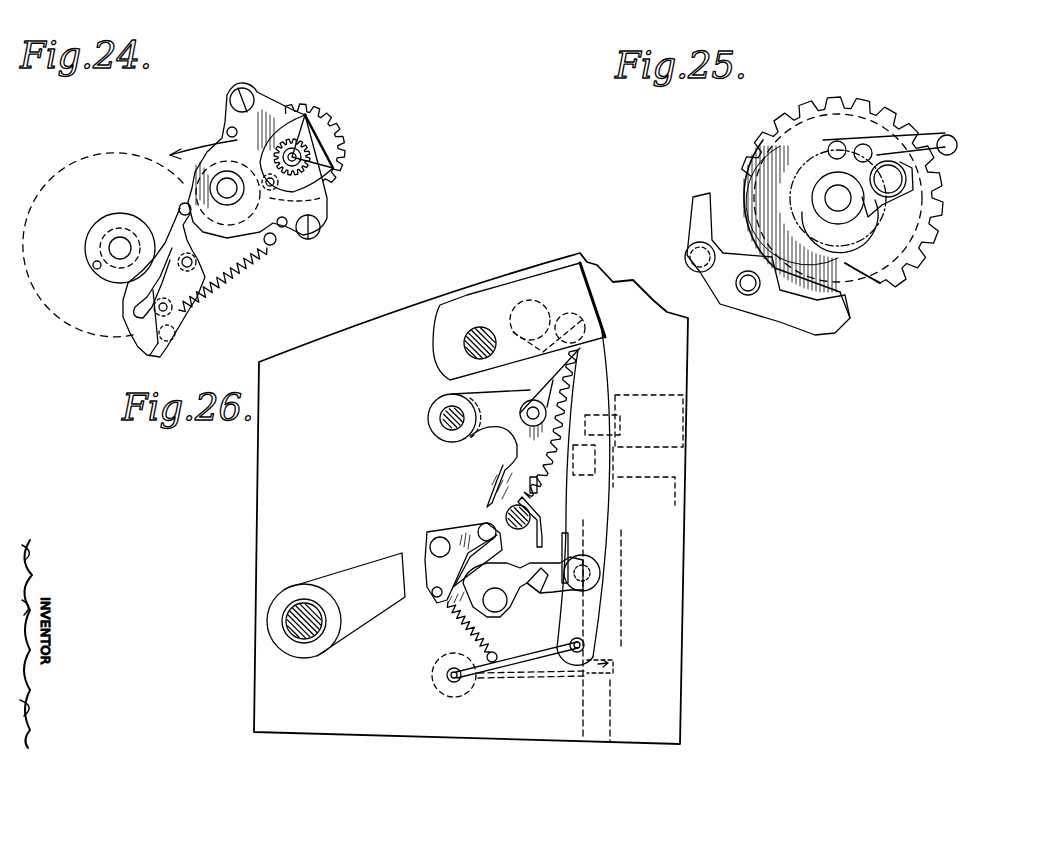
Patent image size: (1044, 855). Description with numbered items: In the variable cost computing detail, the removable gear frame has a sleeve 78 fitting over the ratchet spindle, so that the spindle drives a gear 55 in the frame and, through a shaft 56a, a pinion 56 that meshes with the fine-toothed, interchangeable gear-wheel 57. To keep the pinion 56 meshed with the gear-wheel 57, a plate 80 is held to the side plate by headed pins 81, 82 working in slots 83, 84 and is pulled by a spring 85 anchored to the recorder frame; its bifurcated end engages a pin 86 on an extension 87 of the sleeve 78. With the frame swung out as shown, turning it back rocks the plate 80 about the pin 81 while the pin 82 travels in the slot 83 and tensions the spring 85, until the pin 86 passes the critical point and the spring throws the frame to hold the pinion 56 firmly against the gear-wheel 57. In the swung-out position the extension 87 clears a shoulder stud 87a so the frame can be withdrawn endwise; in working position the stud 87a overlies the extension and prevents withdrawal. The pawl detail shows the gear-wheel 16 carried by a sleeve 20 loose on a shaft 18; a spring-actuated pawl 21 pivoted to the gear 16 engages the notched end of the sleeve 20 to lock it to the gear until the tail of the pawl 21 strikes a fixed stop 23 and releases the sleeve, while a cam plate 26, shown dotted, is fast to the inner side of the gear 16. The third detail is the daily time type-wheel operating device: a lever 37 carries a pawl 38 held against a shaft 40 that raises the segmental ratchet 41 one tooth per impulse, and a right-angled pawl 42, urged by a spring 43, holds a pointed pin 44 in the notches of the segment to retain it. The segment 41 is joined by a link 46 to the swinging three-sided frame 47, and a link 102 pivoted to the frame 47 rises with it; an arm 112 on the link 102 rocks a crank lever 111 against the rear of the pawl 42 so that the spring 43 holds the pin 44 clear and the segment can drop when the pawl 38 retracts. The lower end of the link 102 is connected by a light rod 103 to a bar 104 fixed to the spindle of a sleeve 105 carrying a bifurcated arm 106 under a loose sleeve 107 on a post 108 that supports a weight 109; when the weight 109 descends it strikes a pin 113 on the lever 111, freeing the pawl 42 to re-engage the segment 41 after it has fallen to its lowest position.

In FIG. 24, the gear-wheel 57 is at (46, 190).
In FIG. 24, the slot 83 is at (143, 310).
In FIG. 24, the plate 80 is at (133, 327).
In FIG. 24, the slot 84 is at (150, 355).
In FIG. 24, the pin 82 is at (197, 262).
In FIG. 24, the pin 81 is at (170, 311).
In FIG. 24, the spring 85 is at (235, 288).
In FIG. 24, the extension 87 is at (300, 208).
In FIG. 24, the shoulder stud 87a is at (320, 198).
In FIG. 24, the sleeve 78 is at (238, 200).
In FIG. 24, the pin 86 is at (180, 206).
In FIG. 24, the gear 55 is at (333, 122).
In FIG. 24, the pinion 56 is at (335, 168).
In FIG. 24, the shaft 56a is at (306, 114).
In FIG. 25, the gear-wheel 16 is at (922, 254).
In FIG. 25, the shaft 18 is at (832, 198).
In FIG. 25, the pawl 21 is at (893, 200).
In FIG. 25, the fixed stop 23 is at (957, 145).
In FIG. 25, the cam plate 26 is at (880, 265).
In FIG. 25, the sleeve 20 is at (850, 220).
In FIG. 26, the plate 47 is at (562, 290).
In FIG. 26, the link 102 is at (583, 492).
In FIG. 26, the link 46 is at (530, 377).
In FIG. 26, the segmental ratchet 41 is at (522, 457).
In FIG. 26, the pawl 38 is at (537, 508).
In FIG. 26, the shaft 40 is at (519, 530).
In FIG. 26, the pawl 42 is at (448, 523).
In FIG. 26, the pin 44 is at (476, 561).
In FIG. 26, the crank lever 111 is at (523, 587).
In FIG. 26, the arm 112 is at (540, 594).
In FIG. 26, the pin 113 is at (585, 558).
In FIG. 26, the spring 43 is at (460, 626).
In FIG. 26, the bar 104 is at (505, 683).
In FIG. 26, the sleeve 105 is at (460, 683).
In FIG. 26, the rod 103 is at (583, 642).
In FIG. 26, the arm 106 is at (572, 676).
In FIG. 26, the weight 109 is at (668, 502).
In FIG. 26, the loose sleeve 107 is at (613, 640).
In FIG. 26, the post 108 is at (610, 687).
In FIG. 26, the lever 37 is at (336, 605).